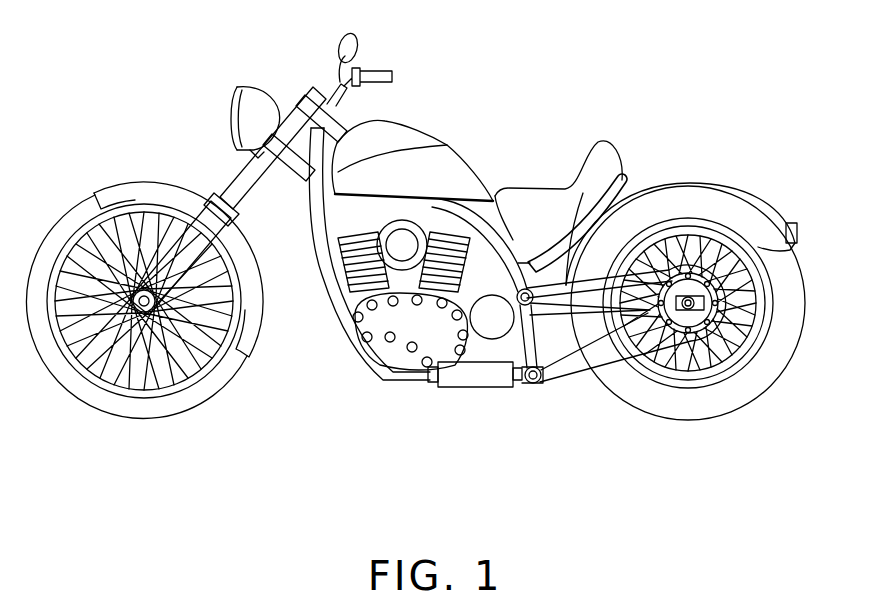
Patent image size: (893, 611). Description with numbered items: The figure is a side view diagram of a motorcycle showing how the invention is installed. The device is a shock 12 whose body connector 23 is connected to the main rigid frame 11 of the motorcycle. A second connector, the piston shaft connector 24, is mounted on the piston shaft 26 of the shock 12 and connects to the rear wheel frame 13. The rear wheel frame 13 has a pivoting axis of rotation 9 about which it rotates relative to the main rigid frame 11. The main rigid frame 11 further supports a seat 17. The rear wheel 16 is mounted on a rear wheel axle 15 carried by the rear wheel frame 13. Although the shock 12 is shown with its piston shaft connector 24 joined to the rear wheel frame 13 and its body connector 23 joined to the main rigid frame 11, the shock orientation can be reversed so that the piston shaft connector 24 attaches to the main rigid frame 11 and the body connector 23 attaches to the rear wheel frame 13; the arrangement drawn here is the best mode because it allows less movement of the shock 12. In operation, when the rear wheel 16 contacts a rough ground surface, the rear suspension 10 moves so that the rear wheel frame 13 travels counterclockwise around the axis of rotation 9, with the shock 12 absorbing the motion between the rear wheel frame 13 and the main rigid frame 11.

The pivoting axis of rotation 9 is at (530, 284).
The rear suspension 10 is at (590, 80).
The main rigid frame 11 is at (445, 142).
The shock 12 is at (472, 382).
The rear wheel frame 13 is at (570, 355).
The rear wheel axle 15 is at (685, 316).
The rear wheel 16 is at (735, 225).
The seat 17 is at (610, 150).
The body connector 23 is at (434, 385).
The piston shaft connector 24 is at (536, 392).
The piston shaft 26 is at (520, 388).